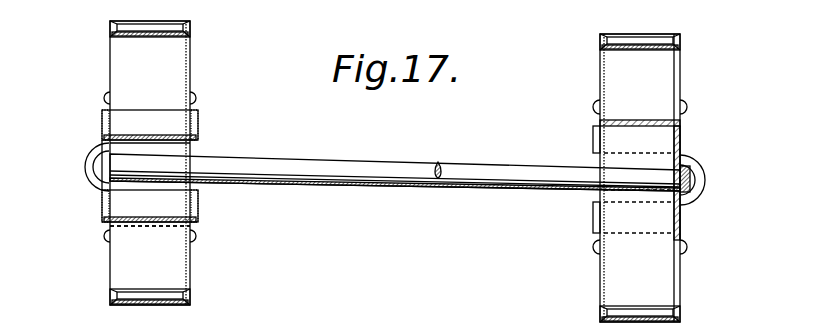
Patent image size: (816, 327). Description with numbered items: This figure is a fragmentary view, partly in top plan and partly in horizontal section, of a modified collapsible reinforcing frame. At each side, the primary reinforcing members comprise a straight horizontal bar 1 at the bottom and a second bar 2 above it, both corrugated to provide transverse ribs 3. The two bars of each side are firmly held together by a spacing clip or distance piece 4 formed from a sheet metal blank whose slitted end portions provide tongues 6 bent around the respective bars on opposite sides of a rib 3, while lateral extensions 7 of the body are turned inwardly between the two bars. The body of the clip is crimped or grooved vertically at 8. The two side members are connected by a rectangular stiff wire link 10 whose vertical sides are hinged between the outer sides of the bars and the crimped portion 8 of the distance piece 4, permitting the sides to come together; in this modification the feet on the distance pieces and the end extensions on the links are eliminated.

The straight horizontal bar 1 is at (668, 90).
The second bar 2 is at (125, 60).
The transverse ribs 3 is at (168, 38).
The spacing clip 4 is at (104, 192).
The tongues 6 is at (152, 120).
The lateral extensions 7 is at (632, 120).
The crimped or grooved portion 8 is at (92, 160).
The link 10 is at (366, 168).